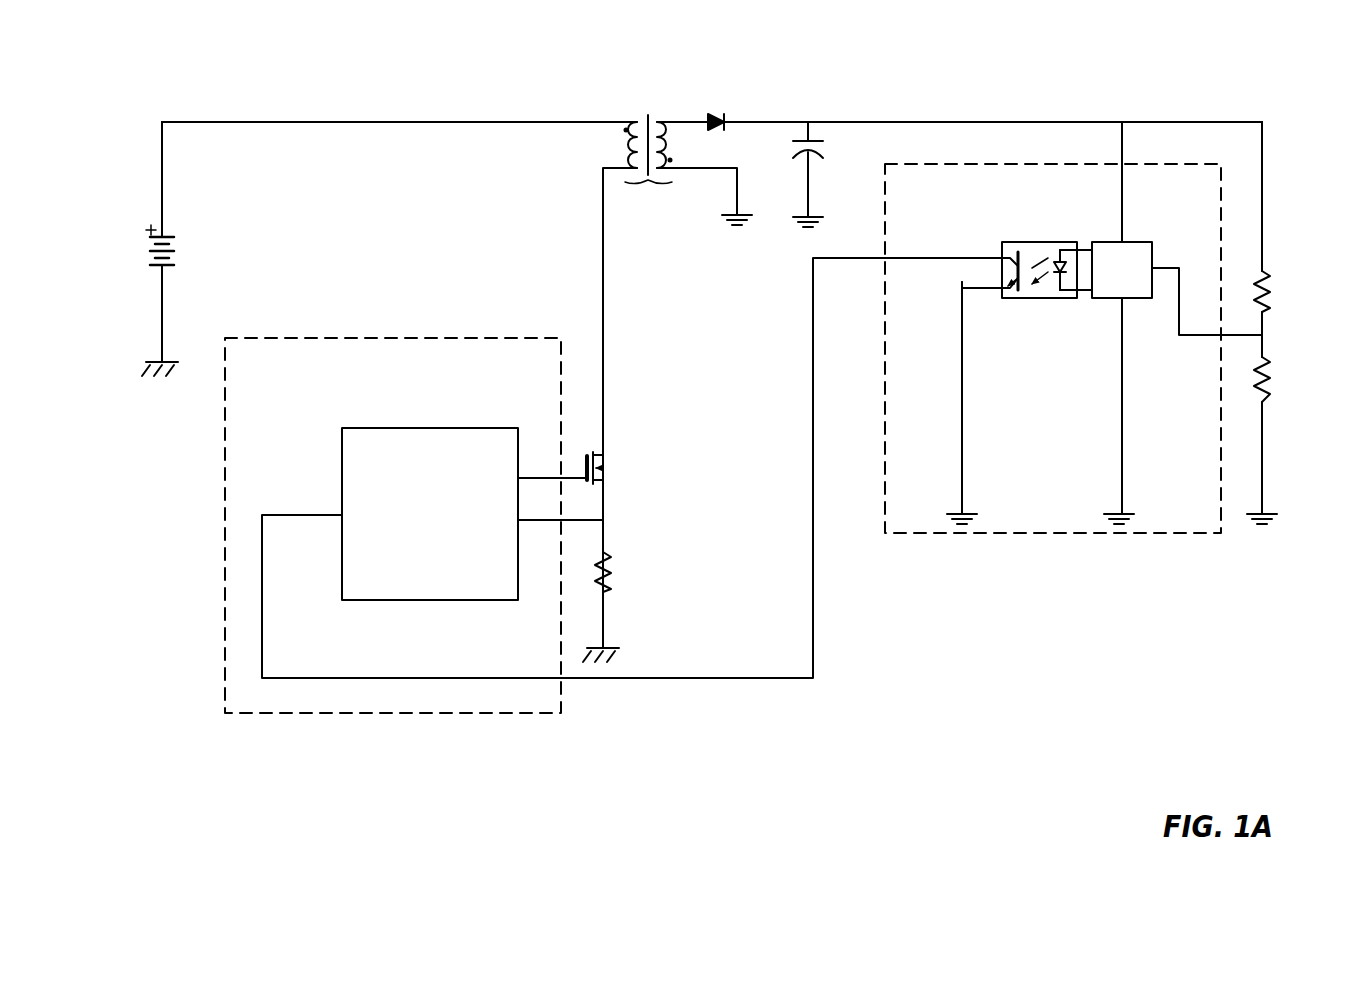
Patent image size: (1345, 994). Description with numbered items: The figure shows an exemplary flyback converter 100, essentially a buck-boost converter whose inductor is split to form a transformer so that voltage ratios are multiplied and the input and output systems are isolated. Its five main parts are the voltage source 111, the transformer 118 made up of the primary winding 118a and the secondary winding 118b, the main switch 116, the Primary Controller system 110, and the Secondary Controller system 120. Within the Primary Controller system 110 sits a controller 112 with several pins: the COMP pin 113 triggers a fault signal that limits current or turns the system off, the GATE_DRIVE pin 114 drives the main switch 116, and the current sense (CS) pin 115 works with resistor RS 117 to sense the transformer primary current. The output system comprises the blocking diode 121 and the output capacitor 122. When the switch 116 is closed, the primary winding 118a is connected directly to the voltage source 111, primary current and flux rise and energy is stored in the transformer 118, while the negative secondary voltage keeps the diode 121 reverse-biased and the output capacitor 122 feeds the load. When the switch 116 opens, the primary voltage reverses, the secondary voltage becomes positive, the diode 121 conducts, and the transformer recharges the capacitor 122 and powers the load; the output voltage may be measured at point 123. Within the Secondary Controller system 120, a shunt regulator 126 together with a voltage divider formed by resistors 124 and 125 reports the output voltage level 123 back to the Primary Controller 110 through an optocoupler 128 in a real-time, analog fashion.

The flyback converter 100 is at (212, 66).
The Primary Controller system 110 is at (273, 718).
The voltage source 111 is at (196, 230).
The controller 112 is at (410, 491).
The COMP pin 113 is at (355, 496).
The GATE_DRIVE pin 114 is at (498, 461).
The current sense (CS) pin 115 is at (500, 533).
The main switch 116 is at (612, 441).
The resistor RS 117 is at (625, 550).
The transformer 118 is at (651, 150).
The primary winding 118a is at (638, 111).
The secondary winding 118b is at (657, 111).
The Secondary Controller system 120 is at (944, 538).
The blocking diode 121 is at (724, 107).
The output capacitor 122 is at (813, 132).
The output voltage point 123 is at (1230, 95).
The resistor 124 is at (1268, 270).
The resistor 125 is at (1268, 357).
The shunt regulator 126 is at (1133, 234).
The optocoupler device 128 is at (1020, 233).